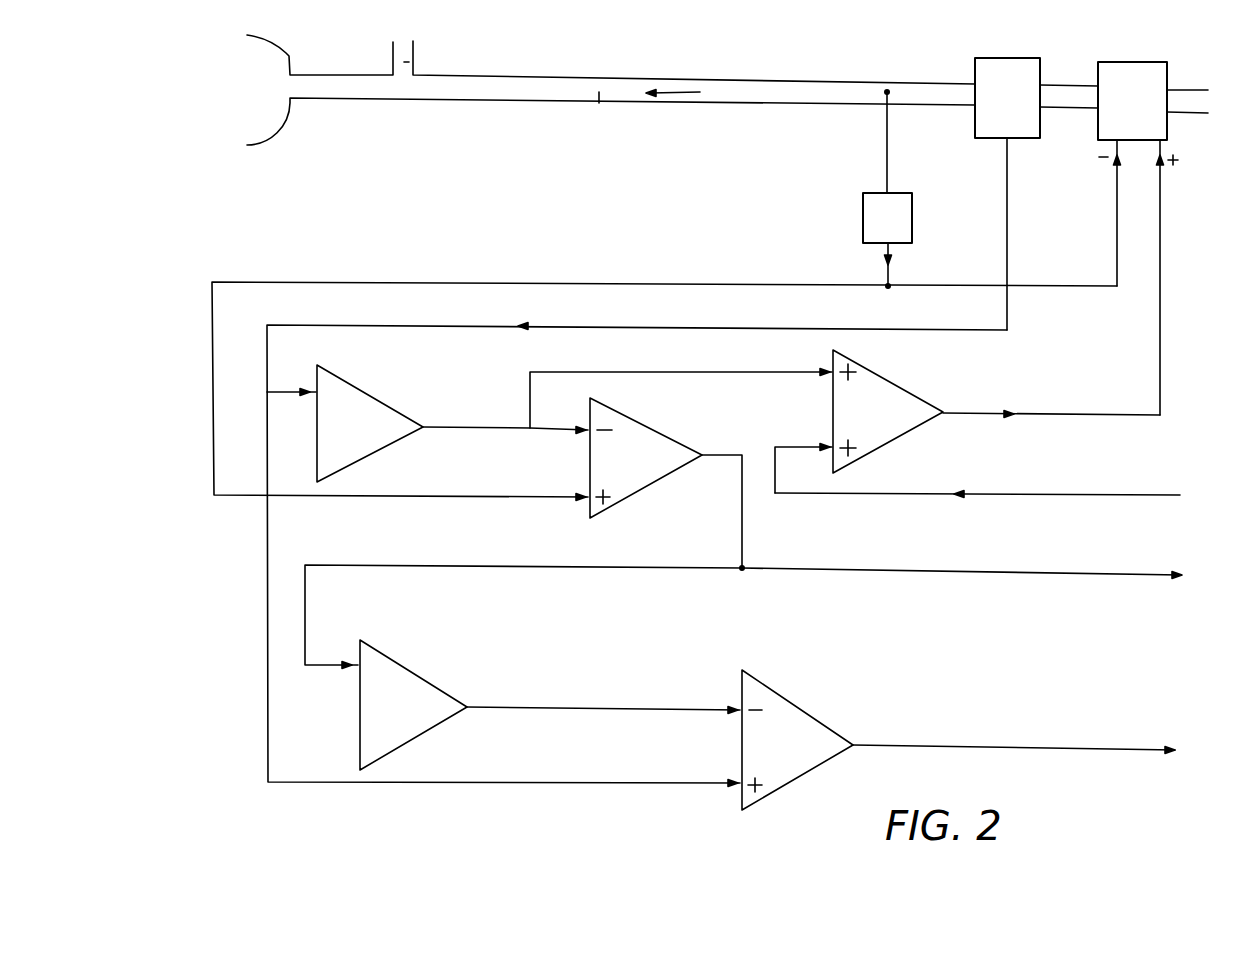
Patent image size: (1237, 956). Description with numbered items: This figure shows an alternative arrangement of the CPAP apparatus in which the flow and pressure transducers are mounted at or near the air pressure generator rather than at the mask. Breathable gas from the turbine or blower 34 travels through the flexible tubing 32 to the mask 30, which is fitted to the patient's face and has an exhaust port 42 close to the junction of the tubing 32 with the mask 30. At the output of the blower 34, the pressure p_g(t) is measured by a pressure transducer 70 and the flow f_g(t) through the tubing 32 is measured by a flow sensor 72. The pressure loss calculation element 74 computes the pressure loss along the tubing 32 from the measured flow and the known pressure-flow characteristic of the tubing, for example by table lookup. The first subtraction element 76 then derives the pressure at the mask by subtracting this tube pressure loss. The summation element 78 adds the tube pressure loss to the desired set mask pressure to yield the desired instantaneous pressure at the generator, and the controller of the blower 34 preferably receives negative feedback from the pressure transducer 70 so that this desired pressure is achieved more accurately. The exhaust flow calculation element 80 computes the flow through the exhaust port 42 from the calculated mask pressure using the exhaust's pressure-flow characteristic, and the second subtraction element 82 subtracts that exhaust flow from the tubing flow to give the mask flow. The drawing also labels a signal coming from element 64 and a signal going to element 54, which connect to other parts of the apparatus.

The mask 30 is at (262, 68).
The exhaust port 42 is at (413, 62).
The flexible tubing 32 is at (596, 103).
The pressure transducer 70 is at (870, 222).
The flow sensor 72 is at (972, 127).
The turbine or blower 34 is at (1097, 125).
The pressure loss calculation element 74 is at (340, 395).
The first subtraction element 76 is at (625, 440).
The summation element 78 is at (880, 386).
The exhaust flow calculation element 80 is at (390, 672).
The second subtraction element 82 is at (782, 730).
The output to element 54 is at (1049, 747).
The input from element 64 is at (1018, 495).